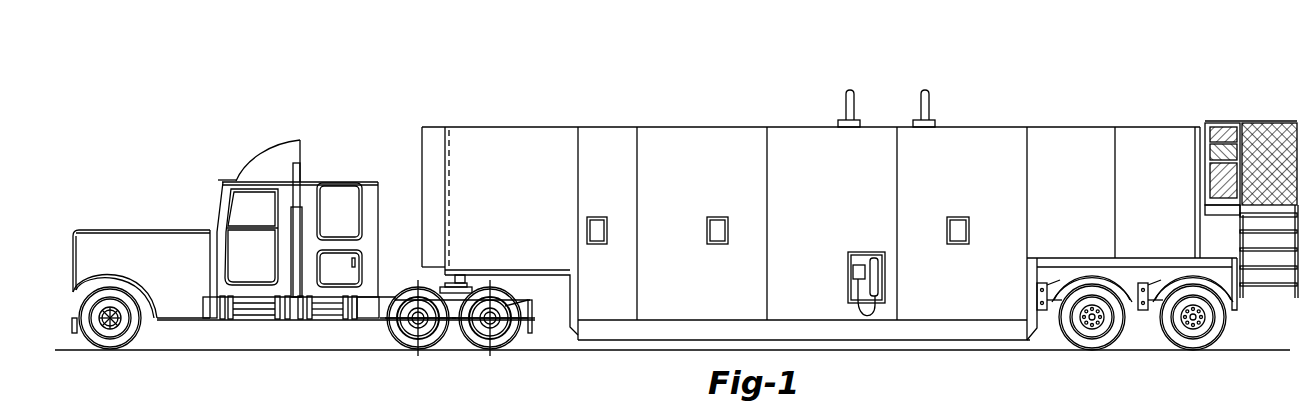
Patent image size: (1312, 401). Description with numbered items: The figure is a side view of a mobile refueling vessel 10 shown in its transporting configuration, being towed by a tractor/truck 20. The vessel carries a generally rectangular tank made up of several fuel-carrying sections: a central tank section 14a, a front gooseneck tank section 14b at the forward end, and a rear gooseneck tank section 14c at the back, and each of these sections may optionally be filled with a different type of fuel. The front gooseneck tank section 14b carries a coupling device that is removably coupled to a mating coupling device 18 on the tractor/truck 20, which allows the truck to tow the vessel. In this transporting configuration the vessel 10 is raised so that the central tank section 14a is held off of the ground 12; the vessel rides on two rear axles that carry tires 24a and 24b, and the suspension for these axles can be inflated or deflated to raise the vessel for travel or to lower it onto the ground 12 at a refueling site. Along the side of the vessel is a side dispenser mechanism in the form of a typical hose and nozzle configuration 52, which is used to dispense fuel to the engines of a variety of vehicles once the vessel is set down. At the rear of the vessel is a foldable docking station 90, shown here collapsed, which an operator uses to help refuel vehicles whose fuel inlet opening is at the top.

The mobile refueling vessel 10 is at (975, 92).
The ground 12 is at (1268, 350).
The central tank section 14a is at (695, 135).
The front gooseneck tank section 14b is at (490, 136).
The rear gooseneck tank section 14c is at (1085, 135).
The mating coupling device 18 is at (468, 285).
The tractor/truck 20 is at (140, 232).
The tire 24a is at (1070, 343).
The tire 24b is at (1197, 343).
The hose and nozzle configuration 52 is at (857, 262).
The foldable docking station 90 is at (1290, 125).